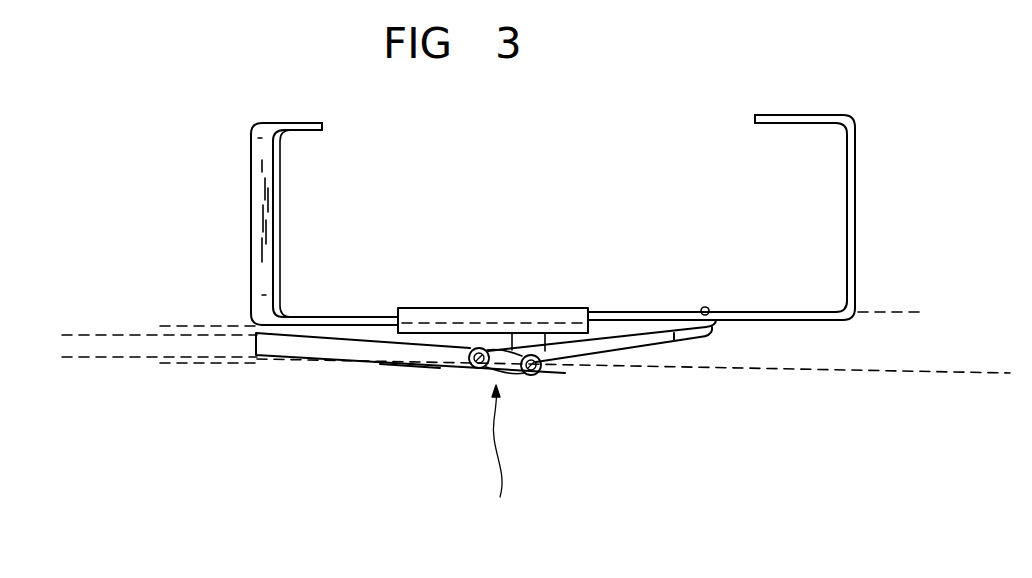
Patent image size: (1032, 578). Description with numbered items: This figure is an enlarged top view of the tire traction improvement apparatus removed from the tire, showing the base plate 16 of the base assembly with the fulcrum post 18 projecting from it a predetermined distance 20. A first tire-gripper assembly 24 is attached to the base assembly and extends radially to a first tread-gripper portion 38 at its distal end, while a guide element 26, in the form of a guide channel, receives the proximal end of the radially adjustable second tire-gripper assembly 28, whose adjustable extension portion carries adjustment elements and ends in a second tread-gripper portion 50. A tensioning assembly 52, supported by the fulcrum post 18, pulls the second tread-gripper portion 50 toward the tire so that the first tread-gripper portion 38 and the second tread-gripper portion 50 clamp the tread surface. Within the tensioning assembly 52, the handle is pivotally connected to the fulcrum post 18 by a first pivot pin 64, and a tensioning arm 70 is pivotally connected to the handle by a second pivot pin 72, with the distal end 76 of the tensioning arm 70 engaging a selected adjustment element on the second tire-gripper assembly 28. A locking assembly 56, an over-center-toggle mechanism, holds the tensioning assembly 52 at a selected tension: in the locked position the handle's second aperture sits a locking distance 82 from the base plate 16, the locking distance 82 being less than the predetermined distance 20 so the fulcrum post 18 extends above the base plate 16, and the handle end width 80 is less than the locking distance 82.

The base plate 16 is at (530, 308).
The fulcrum post 18 is at (521, 376).
The predetermined distance 20 is at (908, 312).
The first tire-gripper assembly 24 is at (250, 200).
The guide element 26 is at (418, 364).
The second tire-gripper assembly 28 is at (829, 295).
The first tread-gripper portion 38 is at (250, 157).
The second tread-gripper portion 50 is at (849, 203).
The tensioning assembly 52 is at (350, 362).
The locking assembly 56 is at (504, 464).
The first pivot pin 64 is at (555, 390).
The tensioning arm 70 is at (674, 340).
The second pivot pin 72 is at (470, 366).
The distal end of tensioning arm 76 is at (704, 306).
The handle end width 80 is at (73, 357).
The locking distance 82 is at (175, 325).